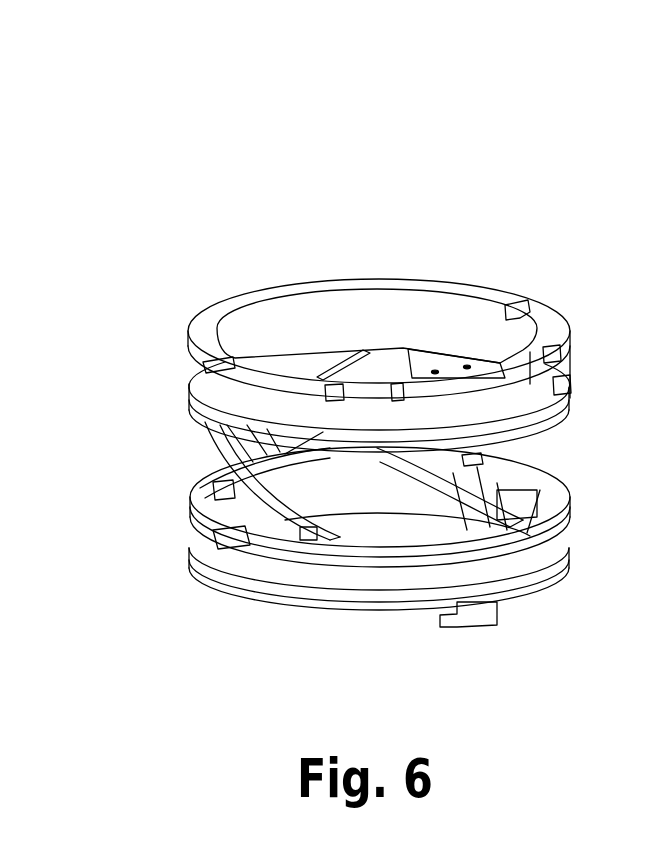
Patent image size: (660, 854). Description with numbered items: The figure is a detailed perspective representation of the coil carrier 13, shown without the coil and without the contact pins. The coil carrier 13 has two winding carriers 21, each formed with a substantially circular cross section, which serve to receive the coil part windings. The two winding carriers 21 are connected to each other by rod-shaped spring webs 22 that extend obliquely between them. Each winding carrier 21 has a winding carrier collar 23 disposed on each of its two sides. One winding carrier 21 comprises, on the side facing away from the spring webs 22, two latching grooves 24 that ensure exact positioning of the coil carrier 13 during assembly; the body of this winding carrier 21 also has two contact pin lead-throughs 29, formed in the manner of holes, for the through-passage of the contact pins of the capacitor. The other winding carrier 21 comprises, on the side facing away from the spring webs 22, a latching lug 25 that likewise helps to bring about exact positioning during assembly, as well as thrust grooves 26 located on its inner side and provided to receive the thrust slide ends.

The coil carrier 13 is at (375, 192).
The winding carrier 21 is at (274, 310).
The spring web 22 is at (343, 363).
The winding carrier collar 23 is at (214, 312).
The latching groove 24 is at (512, 302).
The latching lug 25 is at (482, 614).
The thrust groove 26 is at (478, 500).
The contact pin lead-through 29 is at (434, 370).